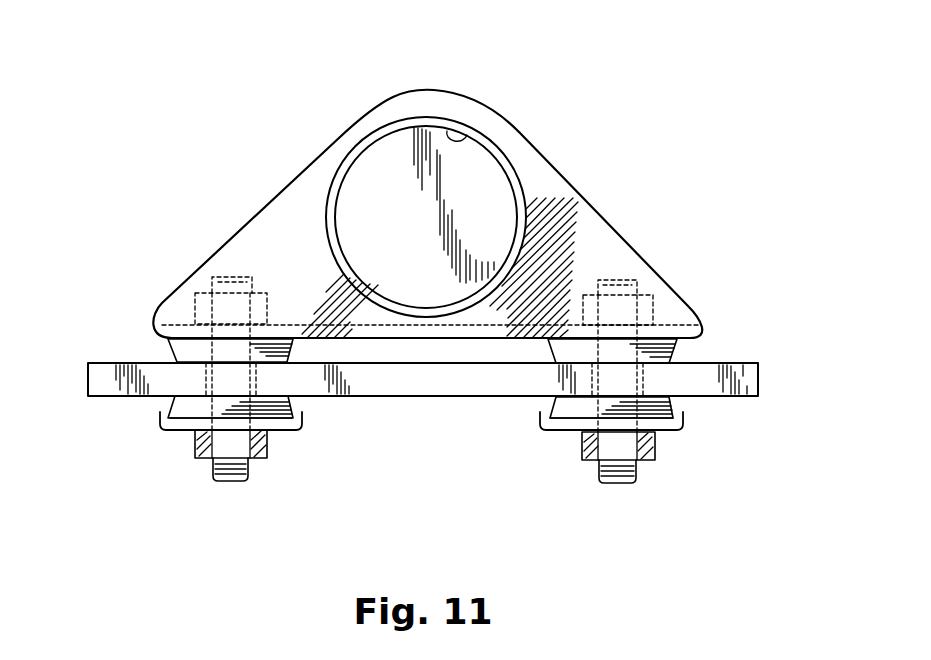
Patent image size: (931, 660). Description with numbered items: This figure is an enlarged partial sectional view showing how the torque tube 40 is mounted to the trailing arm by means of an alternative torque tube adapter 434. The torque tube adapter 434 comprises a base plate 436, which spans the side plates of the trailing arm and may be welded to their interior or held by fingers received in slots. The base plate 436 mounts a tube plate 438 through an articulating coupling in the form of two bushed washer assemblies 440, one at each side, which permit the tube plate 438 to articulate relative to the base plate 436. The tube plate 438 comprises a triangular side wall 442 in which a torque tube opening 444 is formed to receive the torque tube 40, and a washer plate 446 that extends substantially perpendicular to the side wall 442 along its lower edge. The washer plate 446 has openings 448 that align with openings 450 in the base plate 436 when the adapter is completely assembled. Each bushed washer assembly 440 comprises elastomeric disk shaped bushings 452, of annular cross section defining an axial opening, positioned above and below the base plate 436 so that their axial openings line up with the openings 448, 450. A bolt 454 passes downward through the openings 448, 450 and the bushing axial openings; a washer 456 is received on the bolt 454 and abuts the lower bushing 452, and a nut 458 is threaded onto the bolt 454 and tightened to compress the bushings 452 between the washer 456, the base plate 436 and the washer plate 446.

The torque tube 40 is at (467, 134).
The torque tube adapter 434 is at (656, 183).
The base plate 436 is at (760, 363).
The tube plate 438 is at (248, 210).
The bushed washer assemblies 440 is at (306, 435).
The triangular side wall 442 is at (525, 138).
The torque tube opening 444 is at (378, 130).
The washer plate 446 is at (678, 327).
The openings 448 is at (203, 303).
The openings 450 is at (205, 372).
The elastomeric disk shaped bushings 452 is at (167, 345).
The bolt 454 is at (225, 278).
The washer 456 is at (163, 427).
The nut 458 is at (268, 458).